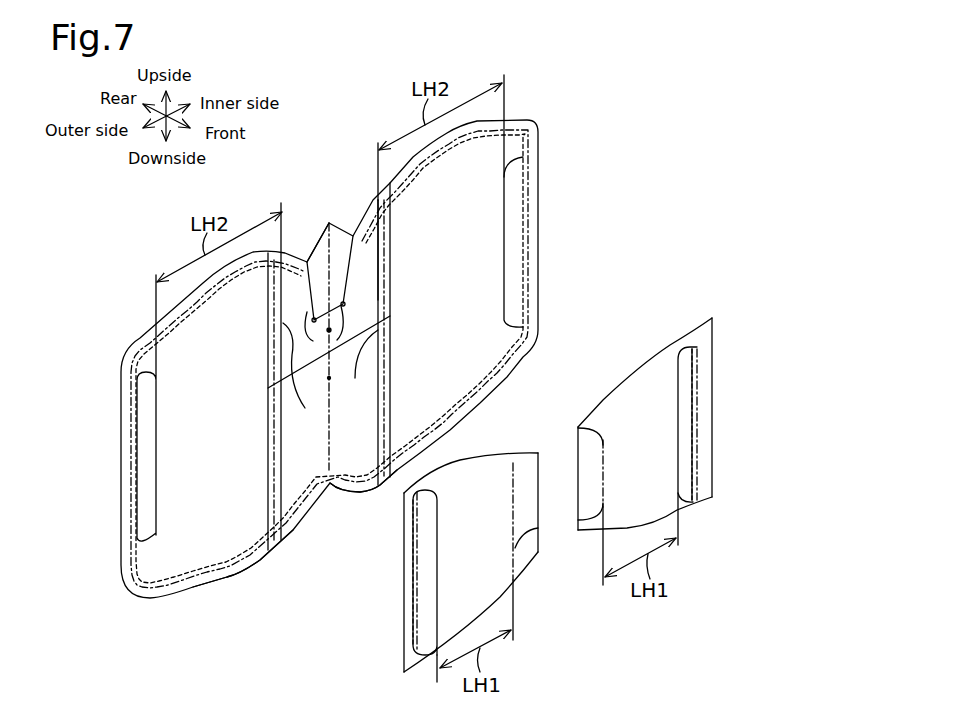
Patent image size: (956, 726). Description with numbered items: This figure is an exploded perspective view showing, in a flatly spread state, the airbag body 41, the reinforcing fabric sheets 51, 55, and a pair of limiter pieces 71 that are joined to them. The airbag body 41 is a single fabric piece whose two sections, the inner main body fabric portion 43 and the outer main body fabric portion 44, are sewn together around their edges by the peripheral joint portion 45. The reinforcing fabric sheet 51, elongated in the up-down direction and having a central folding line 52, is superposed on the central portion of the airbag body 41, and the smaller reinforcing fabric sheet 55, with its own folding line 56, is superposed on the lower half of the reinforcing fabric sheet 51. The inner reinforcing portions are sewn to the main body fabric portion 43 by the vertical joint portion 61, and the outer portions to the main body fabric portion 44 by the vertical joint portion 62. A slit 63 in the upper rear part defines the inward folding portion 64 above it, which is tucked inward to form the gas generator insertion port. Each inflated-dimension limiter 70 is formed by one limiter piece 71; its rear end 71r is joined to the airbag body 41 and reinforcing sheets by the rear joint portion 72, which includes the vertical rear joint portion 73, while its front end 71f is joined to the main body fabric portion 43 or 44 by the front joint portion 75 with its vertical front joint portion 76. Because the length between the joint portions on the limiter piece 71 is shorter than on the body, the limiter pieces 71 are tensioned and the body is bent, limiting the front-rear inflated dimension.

The airbag body 41 is at (378, 538).
The main body fabric portion 43 is at (395, 478).
The main body fabric portion 44 is at (262, 548).
The peripheral joint portion 45 is at (528, 138).
The reinforcing fabric sheet 51 is at (392, 272).
The folding line 52 is at (333, 238).
The reinforcing fabric sheet 55 is at (392, 380).
The folding line 56 is at (331, 452).
The vertical joint portion 61 is at (392, 412).
The vertical joint portion 62 is at (268, 487).
The slit 63 is at (329, 331).
The inward folding portion 64 is at (313, 236).
The inflated-dimension limiter 70 is at (555, 491).
The limiter piece 71 is at (555, 491).
The front end 71f is at (408, 657).
The rear end 71r is at (578, 527).
The rear joint portion 72 is at (433, 445).
The vertical rear joint portion 73 is at (383, 335).
The front joint portion 75 is at (424, 406).
The vertical front joint portion 76 is at (508, 238).